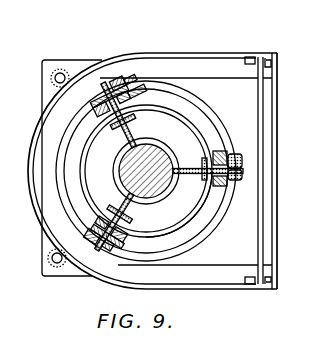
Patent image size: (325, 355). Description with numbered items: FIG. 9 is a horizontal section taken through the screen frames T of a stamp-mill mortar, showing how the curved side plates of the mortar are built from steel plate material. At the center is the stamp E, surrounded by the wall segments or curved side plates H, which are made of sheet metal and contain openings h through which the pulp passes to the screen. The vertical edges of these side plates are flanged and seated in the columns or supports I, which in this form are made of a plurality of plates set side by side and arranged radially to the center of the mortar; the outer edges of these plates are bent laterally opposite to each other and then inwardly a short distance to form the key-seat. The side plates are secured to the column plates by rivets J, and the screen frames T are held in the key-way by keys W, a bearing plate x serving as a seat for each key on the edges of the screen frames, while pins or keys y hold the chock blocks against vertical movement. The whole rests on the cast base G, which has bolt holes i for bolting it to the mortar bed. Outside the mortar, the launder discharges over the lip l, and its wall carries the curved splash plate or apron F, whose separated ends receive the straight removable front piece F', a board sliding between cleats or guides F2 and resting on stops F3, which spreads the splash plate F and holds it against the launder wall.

The key W is at (113, 99).
The columns or supports I is at (112, 87).
The bearing plate x is at (128, 90).
The rivets J is at (140, 94).
The pins or keys y is at (134, 118).
The screen frames T is at (175, 99).
The wall segments or curved side plates H is at (193, 118).
The openings h is at (195, 222).
The stamp E is at (157, 199).
The curved splash plate or apron F is at (152, 160).
The cleats or guides F2 is at (268, 61).
The stops F3 is at (266, 68).
The front piece F' is at (278, 170).
The lip l is at (273, 212).
The bolt holes i is at (56, 263).
The base G is at (79, 277).